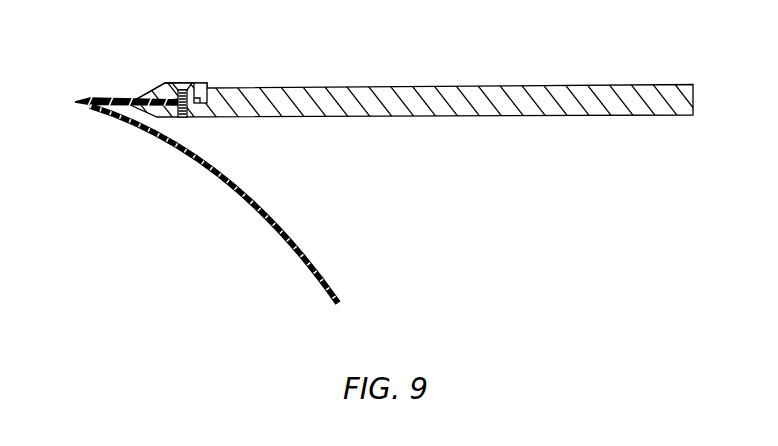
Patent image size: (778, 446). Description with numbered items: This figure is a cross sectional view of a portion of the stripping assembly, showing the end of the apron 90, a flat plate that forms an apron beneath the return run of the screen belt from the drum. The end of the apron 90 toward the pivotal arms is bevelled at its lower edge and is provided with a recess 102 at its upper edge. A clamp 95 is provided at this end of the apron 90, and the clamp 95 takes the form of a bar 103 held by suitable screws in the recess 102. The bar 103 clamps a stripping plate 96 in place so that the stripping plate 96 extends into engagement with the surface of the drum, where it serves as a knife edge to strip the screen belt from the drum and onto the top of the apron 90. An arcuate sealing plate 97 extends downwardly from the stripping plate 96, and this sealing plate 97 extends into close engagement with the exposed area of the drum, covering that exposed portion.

The apron 90 is at (408, 87).
The clamp 95 is at (187, 84).
The stripping plate 96 is at (103, 98).
The arcuate sealing plate 97 is at (233, 188).
The recess 102 is at (207, 85).
The bar 103 is at (153, 87).